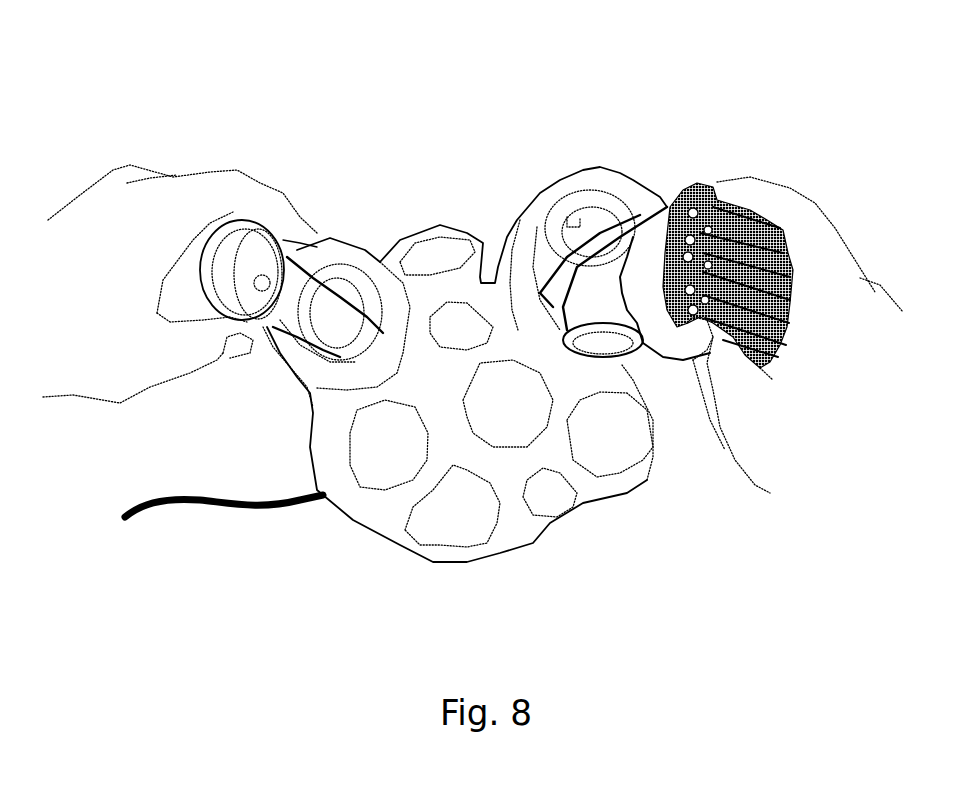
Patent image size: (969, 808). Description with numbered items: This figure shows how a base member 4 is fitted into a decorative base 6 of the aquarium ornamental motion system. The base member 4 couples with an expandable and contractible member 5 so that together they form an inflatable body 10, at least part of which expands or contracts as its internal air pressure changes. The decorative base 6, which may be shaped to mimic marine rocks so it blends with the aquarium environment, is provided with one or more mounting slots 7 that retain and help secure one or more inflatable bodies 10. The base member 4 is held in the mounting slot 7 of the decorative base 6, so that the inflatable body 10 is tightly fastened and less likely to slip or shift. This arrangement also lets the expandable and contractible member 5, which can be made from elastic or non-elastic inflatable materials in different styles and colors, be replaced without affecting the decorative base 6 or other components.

The base member 4 is at (643, 293).
The expandable and contractible member 5 is at (713, 200).
The decorative base 6 is at (387, 512).
The mounting slot 7 is at (358, 333).
The inflatable body 10 is at (729, 146).